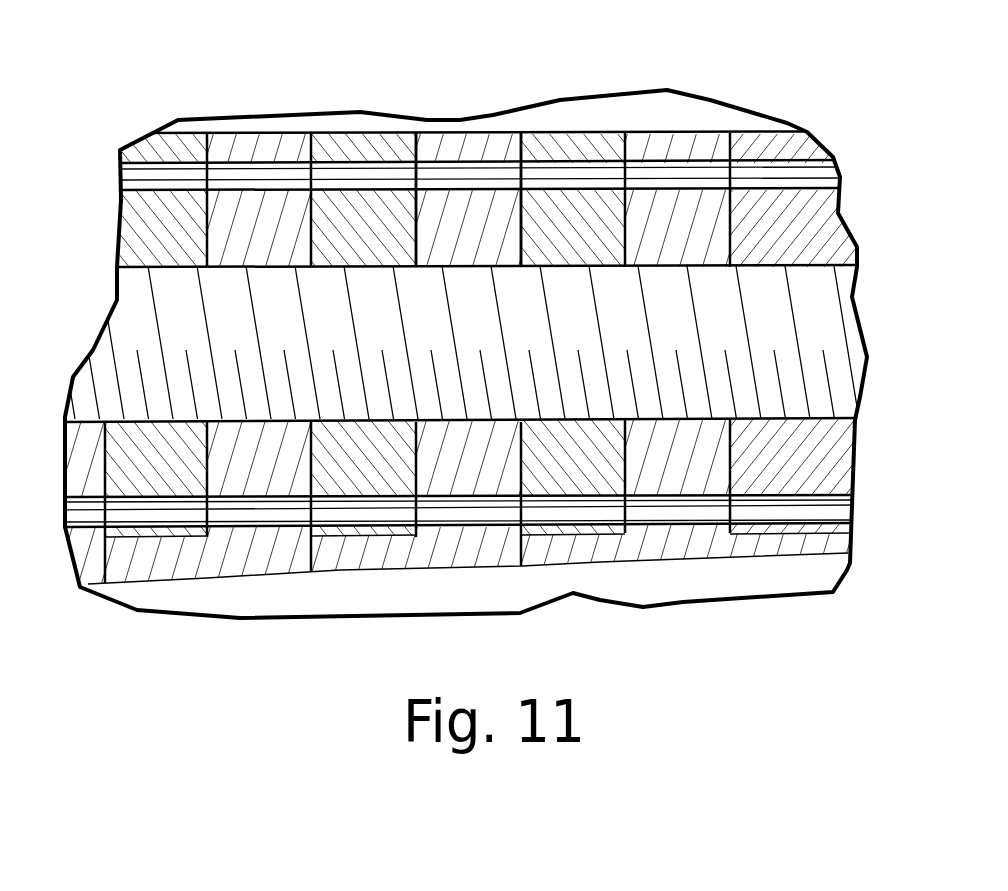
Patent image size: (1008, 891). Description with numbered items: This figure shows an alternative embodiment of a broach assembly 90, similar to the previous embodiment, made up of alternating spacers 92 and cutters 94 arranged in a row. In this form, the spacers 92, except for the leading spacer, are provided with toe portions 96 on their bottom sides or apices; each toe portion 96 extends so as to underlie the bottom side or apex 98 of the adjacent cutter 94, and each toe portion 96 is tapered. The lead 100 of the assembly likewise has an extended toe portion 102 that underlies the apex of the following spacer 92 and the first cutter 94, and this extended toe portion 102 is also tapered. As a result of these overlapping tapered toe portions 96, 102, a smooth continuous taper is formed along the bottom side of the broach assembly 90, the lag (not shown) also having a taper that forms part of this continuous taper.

The broach assembly 90 is at (113, 80).
The spacer 92 is at (465, 145).
The cutter 94 is at (567, 135).
The toe portion 96 is at (410, 563).
The apex of cutter 98 is at (343, 540).
The lead 100 is at (627, 553).
The extended toe portion 102 is at (817, 460).